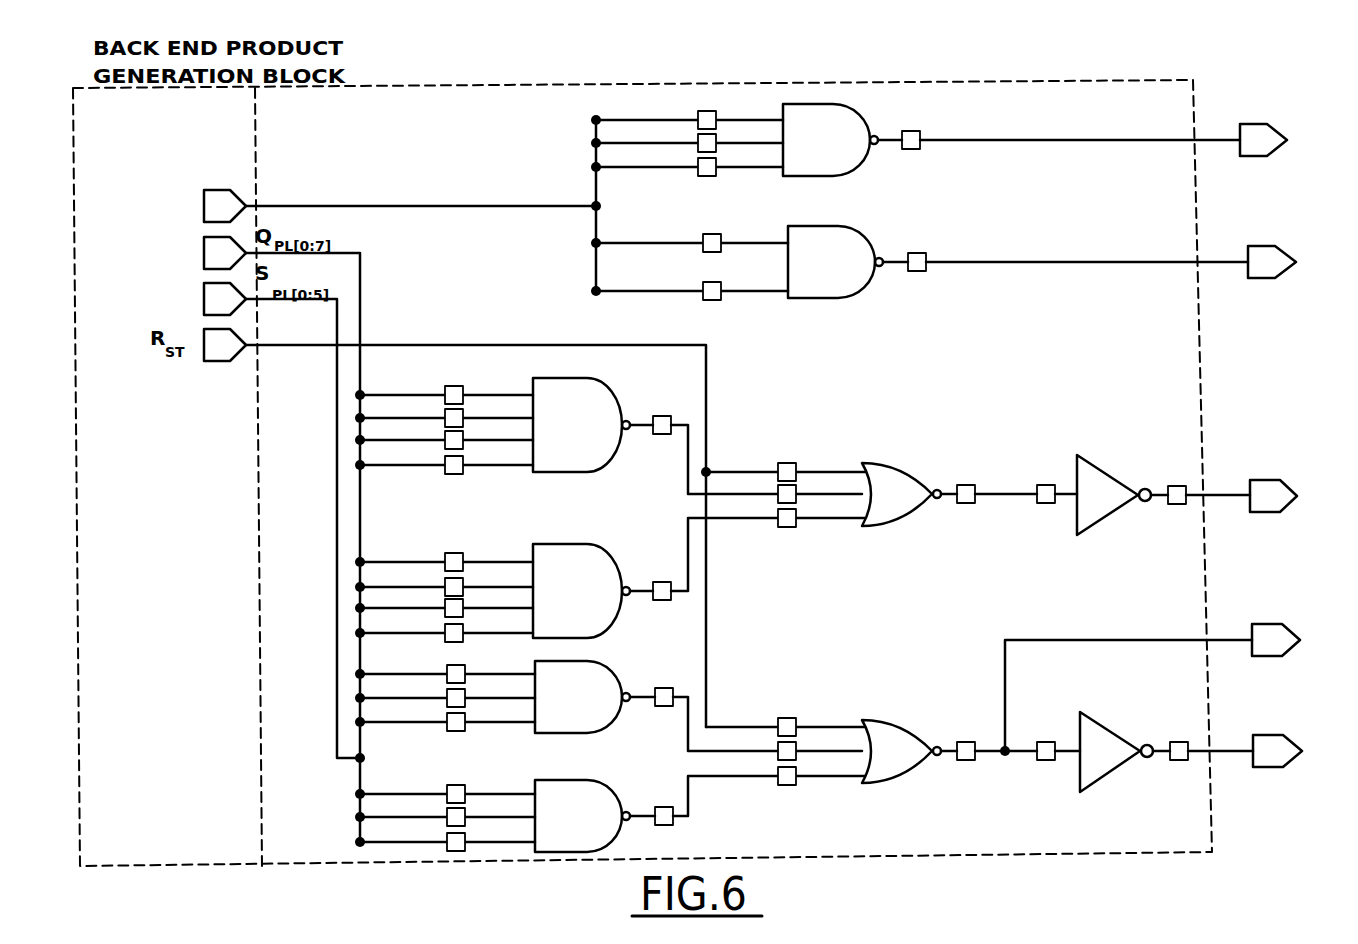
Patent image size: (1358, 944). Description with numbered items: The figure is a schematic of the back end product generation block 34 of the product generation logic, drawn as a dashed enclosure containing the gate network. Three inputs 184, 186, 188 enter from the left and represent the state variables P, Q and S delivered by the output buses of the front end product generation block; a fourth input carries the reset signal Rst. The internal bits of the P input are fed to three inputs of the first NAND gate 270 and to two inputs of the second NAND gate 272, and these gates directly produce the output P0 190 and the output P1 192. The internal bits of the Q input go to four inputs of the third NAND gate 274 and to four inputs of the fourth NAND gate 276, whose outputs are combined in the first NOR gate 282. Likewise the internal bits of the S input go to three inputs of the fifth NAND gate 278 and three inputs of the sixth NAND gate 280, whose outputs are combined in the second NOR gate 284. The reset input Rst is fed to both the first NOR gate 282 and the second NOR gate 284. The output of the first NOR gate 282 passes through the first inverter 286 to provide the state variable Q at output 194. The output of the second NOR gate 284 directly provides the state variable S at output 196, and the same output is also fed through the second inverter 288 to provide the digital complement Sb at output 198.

The back end product generation block 34 is at (432, 86).
The input 184 is at (210, 190).
The input 186 is at (210, 238).
The input 188 is at (207, 283).
The output P0 190 is at (1232, 141).
The output P1 192 is at (1245, 263).
The output Q 194 is at (1218, 495).
The output S 196 is at (1223, 639).
The output Sb 198 is at (1223, 750).
The first NAND gate 270 is at (862, 119).
The second NAND gate 272 is at (863, 239).
The third NAND gate 274 is at (609, 389).
The fourth NAND gate 276 is at (600, 548).
The fifth NAND gate 278 is at (603, 664).
The sixth NAND gate 280 is at (597, 779).
The first NOR gate 282 is at (913, 470).
The second NOR gate 284 is at (902, 722).
The first inverter 286 is at (1105, 473).
The second inverter 288 is at (1110, 730).